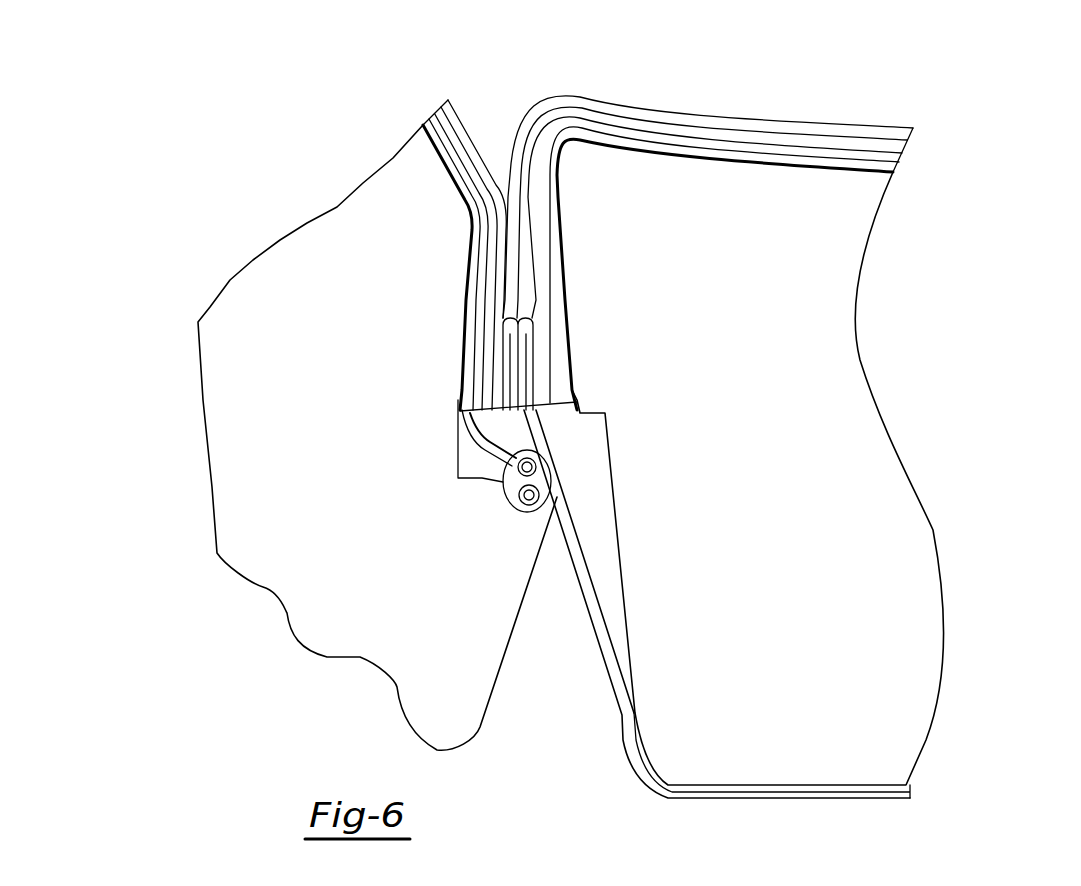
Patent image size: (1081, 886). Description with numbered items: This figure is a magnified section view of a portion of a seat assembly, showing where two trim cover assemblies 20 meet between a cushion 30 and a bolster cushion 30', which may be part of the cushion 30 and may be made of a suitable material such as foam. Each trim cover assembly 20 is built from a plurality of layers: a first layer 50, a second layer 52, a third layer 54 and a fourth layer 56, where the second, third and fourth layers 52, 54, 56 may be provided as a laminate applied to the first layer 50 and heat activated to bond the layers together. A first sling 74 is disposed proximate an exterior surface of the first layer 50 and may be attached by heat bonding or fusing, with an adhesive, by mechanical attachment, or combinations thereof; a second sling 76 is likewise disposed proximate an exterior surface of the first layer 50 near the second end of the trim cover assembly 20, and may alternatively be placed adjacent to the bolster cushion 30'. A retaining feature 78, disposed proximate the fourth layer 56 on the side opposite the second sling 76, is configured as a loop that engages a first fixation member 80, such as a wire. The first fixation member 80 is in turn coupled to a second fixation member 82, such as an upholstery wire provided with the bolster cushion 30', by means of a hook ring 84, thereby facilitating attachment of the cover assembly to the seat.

The trim cover assembly 20 is at (467, 120).
The cushion 30 is at (757, 478).
The bolster cushion 30' is at (317, 437).
The first layer 50 is at (448, 100).
The second layer 52 is at (437, 111).
The third layer 54 is at (428, 119).
The fourth layer 56 is at (424, 127).
The first sling 74 is at (580, 545).
The second sling 76 is at (604, 657).
The retaining feature 78 is at (452, 405).
The first fixation member 80 is at (531, 466).
The second fixation member 82 is at (532, 503).
The hook ring 84 is at (507, 462).